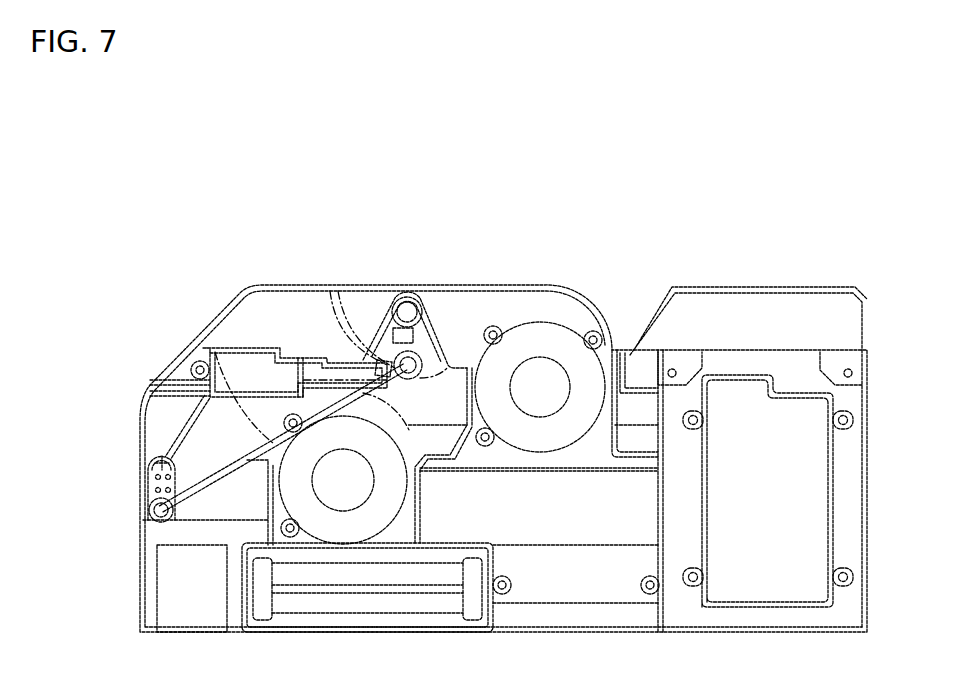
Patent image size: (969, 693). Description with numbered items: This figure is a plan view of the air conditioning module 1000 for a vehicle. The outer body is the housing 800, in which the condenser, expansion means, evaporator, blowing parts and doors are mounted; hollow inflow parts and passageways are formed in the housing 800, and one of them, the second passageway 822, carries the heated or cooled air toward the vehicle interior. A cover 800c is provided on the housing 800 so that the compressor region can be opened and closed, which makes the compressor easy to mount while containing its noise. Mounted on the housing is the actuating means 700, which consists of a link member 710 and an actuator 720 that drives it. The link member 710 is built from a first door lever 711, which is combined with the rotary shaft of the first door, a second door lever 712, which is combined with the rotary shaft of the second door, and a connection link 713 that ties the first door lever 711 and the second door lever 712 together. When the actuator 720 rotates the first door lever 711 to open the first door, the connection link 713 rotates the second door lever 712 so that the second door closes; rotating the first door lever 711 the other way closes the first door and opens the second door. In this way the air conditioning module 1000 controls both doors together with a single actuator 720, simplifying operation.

The air conditioning module 1000 is at (697, 141).
The actuating means 700 is at (157, 224).
The link member 710 is at (143, 284).
The first door lever 711 is at (164, 457).
The second door lever 712 is at (262, 365).
The connection link 713 is at (208, 400).
The actuator 720 is at (262, 358).
The housing 800 is at (567, 294).
The cover 800c is at (760, 287).
The second passageway 822 is at (302, 308).